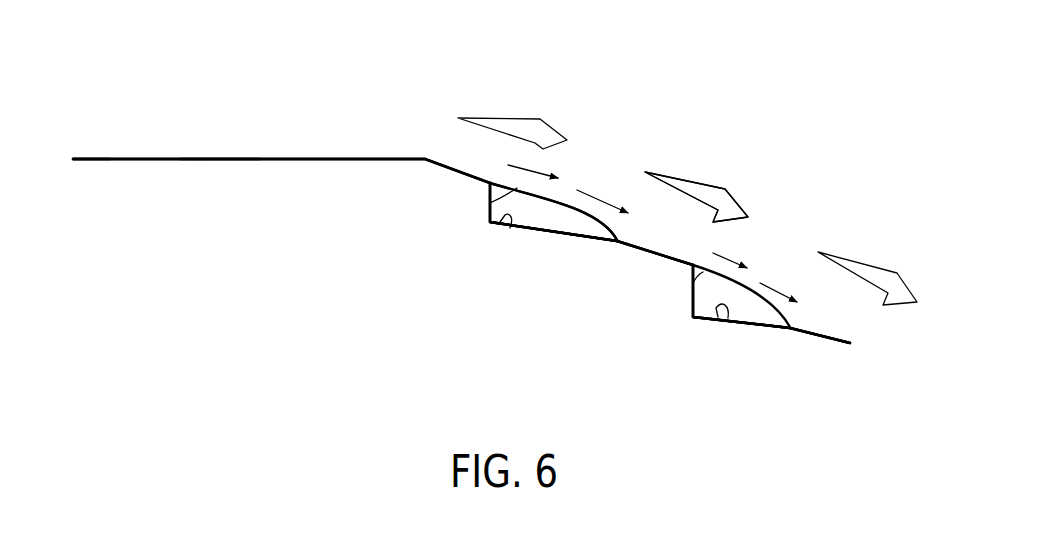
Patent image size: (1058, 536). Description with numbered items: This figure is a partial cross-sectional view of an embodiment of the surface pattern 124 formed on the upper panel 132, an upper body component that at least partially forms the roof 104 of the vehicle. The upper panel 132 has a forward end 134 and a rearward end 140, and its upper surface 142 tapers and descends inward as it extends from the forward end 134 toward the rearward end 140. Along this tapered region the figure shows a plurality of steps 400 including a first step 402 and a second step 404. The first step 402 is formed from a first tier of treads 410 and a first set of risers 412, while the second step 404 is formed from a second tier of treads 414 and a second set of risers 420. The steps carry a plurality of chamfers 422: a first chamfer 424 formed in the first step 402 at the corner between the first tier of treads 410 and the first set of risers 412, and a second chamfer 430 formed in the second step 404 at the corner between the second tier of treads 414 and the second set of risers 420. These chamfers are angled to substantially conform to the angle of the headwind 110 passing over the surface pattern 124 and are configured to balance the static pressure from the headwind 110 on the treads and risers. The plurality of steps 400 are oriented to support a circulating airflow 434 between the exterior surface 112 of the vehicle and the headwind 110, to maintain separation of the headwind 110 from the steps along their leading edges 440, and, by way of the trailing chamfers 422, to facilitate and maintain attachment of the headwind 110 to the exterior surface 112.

The roof 104 is at (120, 72).
The exterior surface 112 is at (98, 157).
The upper surface 142 is at (135, 157).
The first tier of treads 410 is at (333, 157).
The forward end 134 is at (75, 159).
The upper panel 132 is at (215, 163).
The first chamfer 424 is at (448, 167).
The first step 402 is at (470, 200).
The first set of risers 412 is at (517, 188).
The second tier of treads 414 is at (577, 235).
The circulating airflow 434 is at (545, 213).
The leading edges 440 is at (510, 228).
The second step 404 is at (682, 288).
The second chamfer 430 is at (670, 253).
The plurality of chamfers 422 is at (713, 108).
The headwind 110 is at (738, 193).
The second set of risers 420 is at (695, 272).
The rearward end 140 is at (848, 345).
The plurality of steps 400 is at (700, 102).
The surface pattern 124 is at (502, 67).